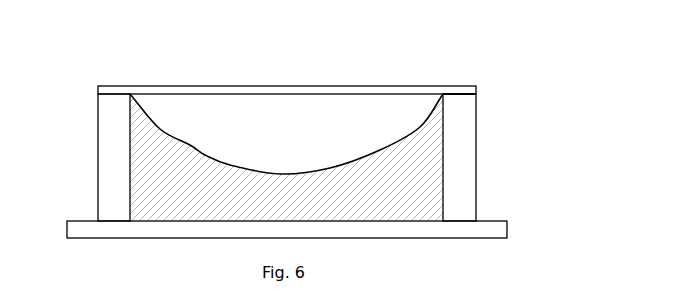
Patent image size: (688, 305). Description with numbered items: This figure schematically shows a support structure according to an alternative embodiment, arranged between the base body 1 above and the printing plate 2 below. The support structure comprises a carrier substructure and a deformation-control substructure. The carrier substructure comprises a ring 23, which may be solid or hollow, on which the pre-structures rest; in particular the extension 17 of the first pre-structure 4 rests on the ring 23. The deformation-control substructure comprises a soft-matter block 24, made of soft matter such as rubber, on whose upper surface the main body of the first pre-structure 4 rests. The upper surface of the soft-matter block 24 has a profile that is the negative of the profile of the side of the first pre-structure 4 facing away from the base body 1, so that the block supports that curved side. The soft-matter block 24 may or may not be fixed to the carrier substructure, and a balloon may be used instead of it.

The base body 1 is at (242, 86).
The printing plate 2 is at (110, 229).
The first pre-structure 4 is at (190, 127).
The extension of the first pre-structure 17 is at (476, 75).
The ring 23 is at (112, 162).
The soft-matter block 24 is at (400, 178).